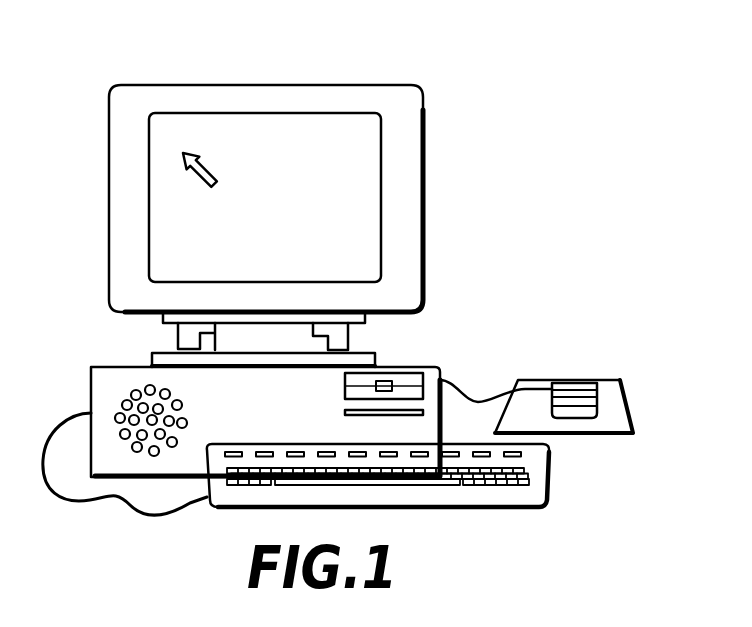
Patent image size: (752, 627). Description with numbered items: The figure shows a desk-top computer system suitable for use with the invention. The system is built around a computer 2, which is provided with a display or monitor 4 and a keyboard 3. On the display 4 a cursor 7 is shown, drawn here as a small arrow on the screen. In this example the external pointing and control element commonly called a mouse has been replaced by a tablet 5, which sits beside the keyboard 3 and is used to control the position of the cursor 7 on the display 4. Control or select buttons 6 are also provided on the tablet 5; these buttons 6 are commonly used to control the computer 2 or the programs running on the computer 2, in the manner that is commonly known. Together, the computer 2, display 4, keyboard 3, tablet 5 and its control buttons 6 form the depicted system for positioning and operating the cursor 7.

The computer 2 is at (415, 368).
The keyboard 3 is at (272, 507).
The display 4 is at (426, 147).
The tablet 5 is at (622, 435).
The control buttons 6 is at (588, 382).
The cursor 7 is at (205, 160).